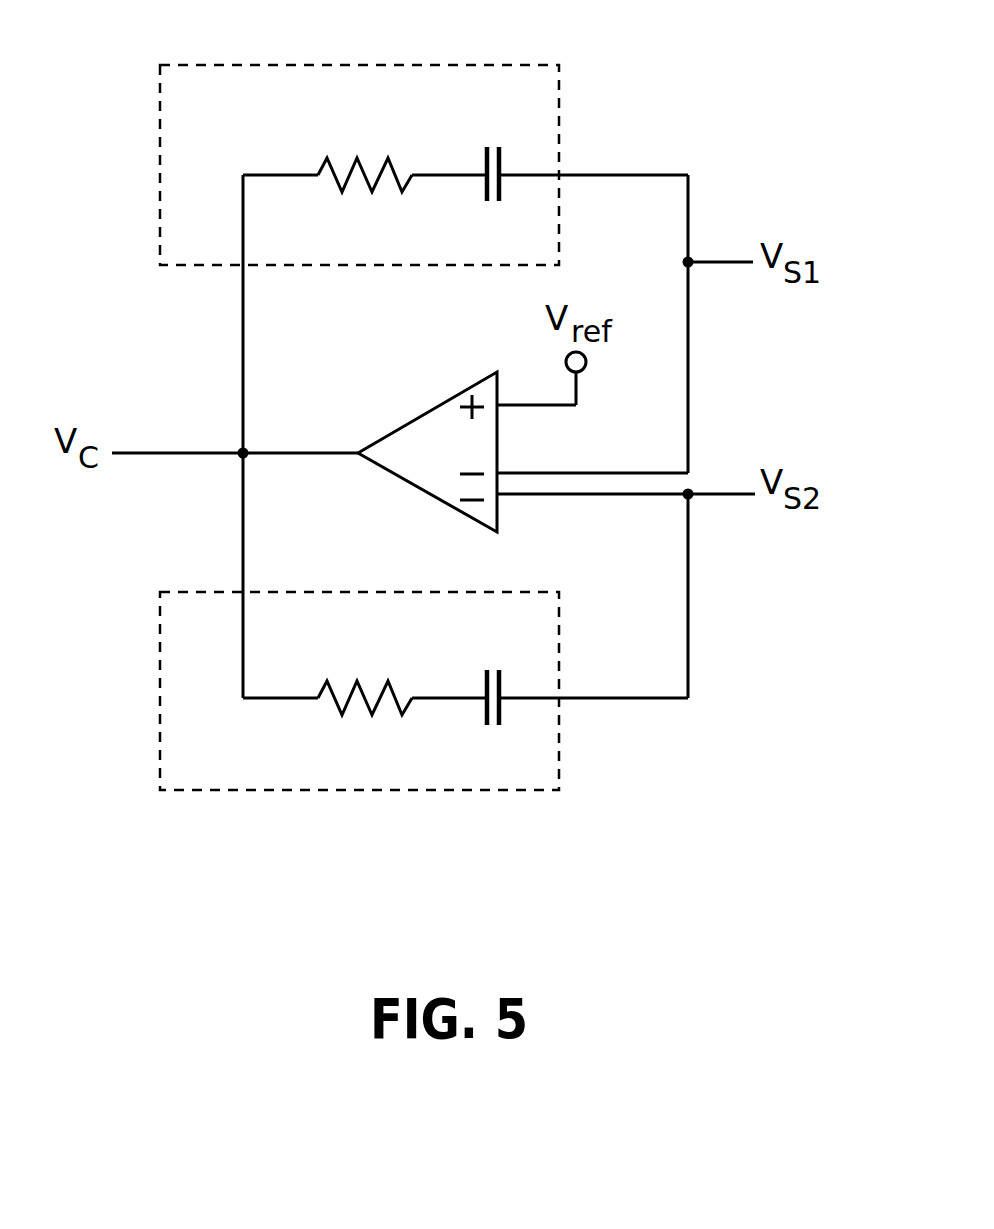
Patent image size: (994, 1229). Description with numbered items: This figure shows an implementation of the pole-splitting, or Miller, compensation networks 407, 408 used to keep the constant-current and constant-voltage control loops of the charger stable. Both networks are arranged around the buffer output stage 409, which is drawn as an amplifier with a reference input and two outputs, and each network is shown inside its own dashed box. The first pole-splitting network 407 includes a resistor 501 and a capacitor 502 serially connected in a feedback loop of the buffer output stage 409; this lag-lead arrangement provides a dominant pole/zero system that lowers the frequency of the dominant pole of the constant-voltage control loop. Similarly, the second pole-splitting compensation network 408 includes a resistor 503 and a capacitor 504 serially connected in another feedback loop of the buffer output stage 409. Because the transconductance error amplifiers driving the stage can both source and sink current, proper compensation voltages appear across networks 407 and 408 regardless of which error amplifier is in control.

The pole-splitting compensation network 407 is at (594, 77).
The pole-splitting compensation network 408 is at (585, 771).
The buffer output stage 409 is at (415, 420).
The resistor 501 is at (360, 186).
The capacitor 502 is at (500, 146).
The resistor 503 is at (360, 712).
The capacitor 504 is at (500, 669).